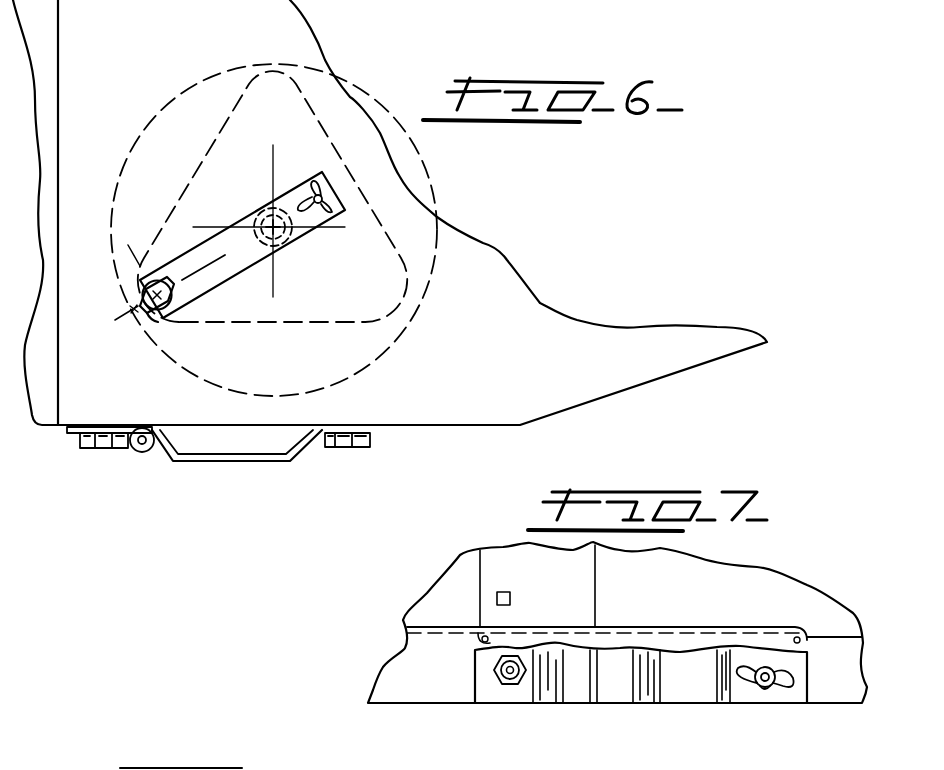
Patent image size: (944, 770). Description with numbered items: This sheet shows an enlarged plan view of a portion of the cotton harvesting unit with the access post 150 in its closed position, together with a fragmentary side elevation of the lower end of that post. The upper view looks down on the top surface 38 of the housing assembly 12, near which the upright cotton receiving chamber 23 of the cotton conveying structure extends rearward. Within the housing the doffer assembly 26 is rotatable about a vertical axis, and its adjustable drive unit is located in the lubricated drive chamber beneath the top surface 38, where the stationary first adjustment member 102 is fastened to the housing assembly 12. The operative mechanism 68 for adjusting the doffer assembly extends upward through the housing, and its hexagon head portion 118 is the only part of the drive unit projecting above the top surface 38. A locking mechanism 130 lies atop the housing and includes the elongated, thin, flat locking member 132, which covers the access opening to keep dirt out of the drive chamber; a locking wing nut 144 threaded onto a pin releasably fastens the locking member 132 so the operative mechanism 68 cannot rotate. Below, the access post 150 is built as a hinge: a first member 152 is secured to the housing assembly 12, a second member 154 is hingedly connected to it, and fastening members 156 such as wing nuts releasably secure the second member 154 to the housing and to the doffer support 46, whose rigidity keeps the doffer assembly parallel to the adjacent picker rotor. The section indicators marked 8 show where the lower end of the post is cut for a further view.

In FIG. 6, the housing assembly 12 is at (647, 392).
In FIG. 6, the upright cotton receiving chamber 23 is at (45, 412).
In FIG. 6, the doffer assembly 26 is at (380, 362).
In FIG. 6, the top surface 38 is at (178, 53).
In FIG. 7, the doffer support 46 is at (682, 616).
In FIG. 6, the operative mechanism 68 is at (147, 319).
In FIG. 6, the first adjustment member 102 is at (425, 255).
In FIG. 6, the hexagon head portion 118 is at (176, 312).
In FIG. 6, the locking mechanism 130 is at (236, 214).
In FIG. 6, the locking member 132 is at (312, 226).
In FIG. 6, the locking wing nut 144 is at (331, 183).
In FIG. 6, the access post 150 is at (220, 472).
In FIG. 7, the access post 150 is at (682, 708).
In FIG. 6, the first member 152 is at (98, 445).
In FIG. 7, the first member 152 is at (512, 696).
In FIG. 6, the second member 154 is at (273, 467).
In FIG. 7, the second member 154 is at (627, 693).
In FIG. 6, the fastening members 156 is at (372, 440).
In FIG. 7, the fastening members 156 is at (783, 689).
In FIG. 7, the section line 8- 8 is at (402, 617).